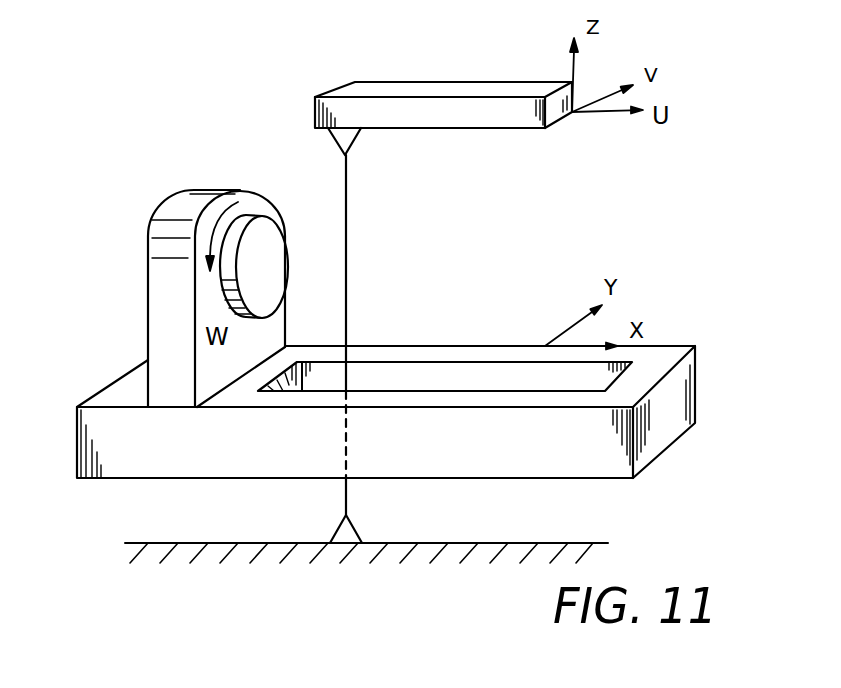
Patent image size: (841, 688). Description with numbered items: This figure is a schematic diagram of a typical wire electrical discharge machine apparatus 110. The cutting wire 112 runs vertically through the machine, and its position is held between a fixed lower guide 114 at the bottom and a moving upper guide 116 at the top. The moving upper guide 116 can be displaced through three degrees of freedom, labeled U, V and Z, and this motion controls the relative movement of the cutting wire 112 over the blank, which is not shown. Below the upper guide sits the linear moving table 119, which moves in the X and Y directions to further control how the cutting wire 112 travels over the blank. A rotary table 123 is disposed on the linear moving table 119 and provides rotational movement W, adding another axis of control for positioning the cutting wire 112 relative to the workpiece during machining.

The wire electrical discharge machine apparatus 110 is at (380, 334).
The cutting wire 112 is at (348, 243).
The fixed lower guide 114 is at (330, 543).
The moving upper guide 116 is at (550, 82).
The linear moving table 119 is at (428, 346).
The rotary table 123 is at (262, 217).